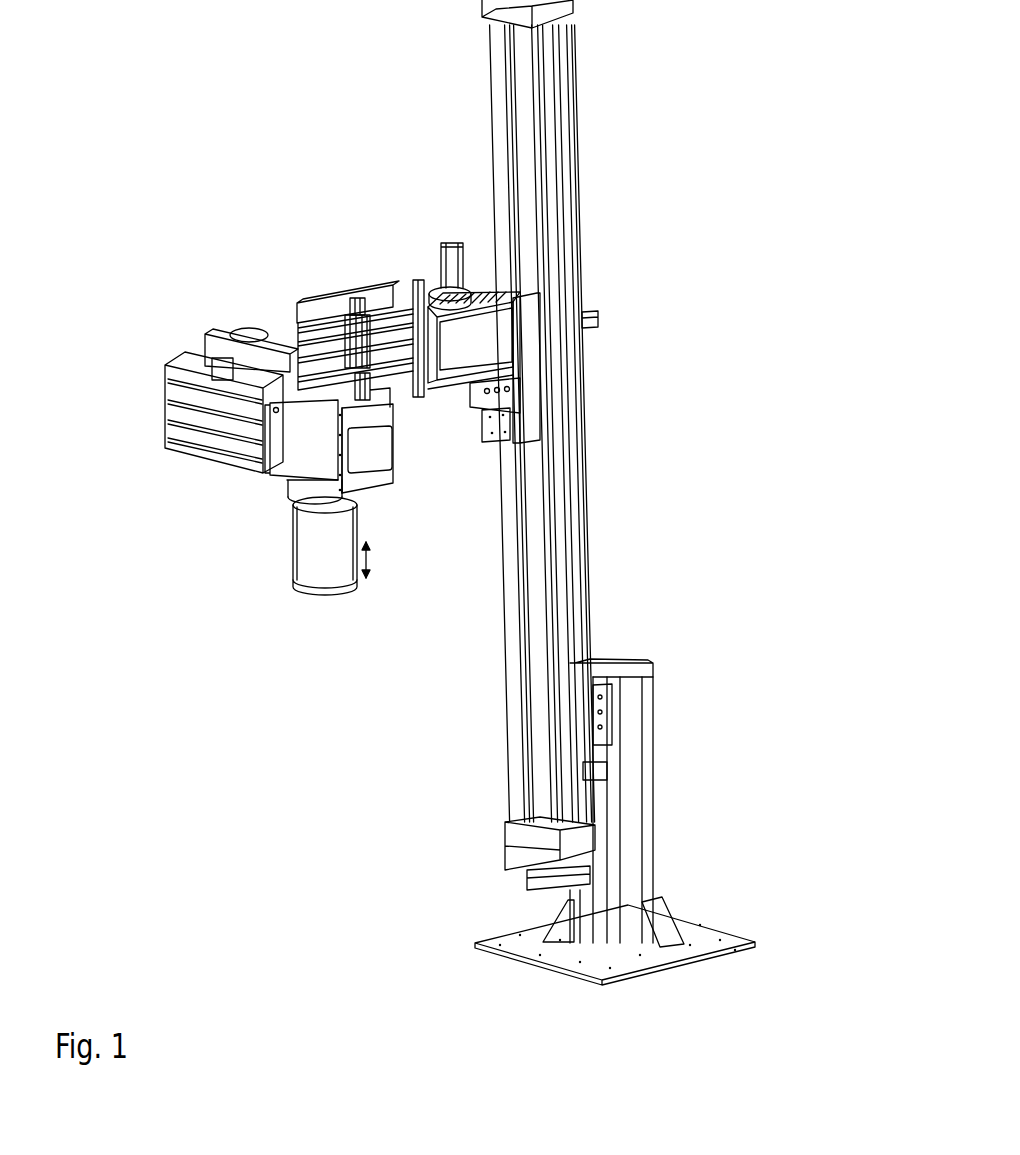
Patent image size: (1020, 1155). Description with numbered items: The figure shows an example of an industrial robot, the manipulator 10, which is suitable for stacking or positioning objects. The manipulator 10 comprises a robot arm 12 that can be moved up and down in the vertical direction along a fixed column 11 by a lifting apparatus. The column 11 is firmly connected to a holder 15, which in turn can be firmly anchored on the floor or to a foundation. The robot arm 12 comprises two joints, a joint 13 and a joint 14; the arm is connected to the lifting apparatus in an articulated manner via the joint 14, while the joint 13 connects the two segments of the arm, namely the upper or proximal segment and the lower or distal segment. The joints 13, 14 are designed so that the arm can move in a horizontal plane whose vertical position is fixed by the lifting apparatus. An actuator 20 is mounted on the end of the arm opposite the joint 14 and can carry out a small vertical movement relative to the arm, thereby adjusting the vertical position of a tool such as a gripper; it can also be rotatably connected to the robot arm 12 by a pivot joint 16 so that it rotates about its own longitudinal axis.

The manipulator 10 is at (683, 220).
The column 11 is at (562, 400).
The robot arm 12 is at (293, 273).
The joint 13 is at (178, 348).
The joint 14 is at (445, 288).
The holder 15 is at (640, 843).
The pivot joint 16 is at (317, 387).
The actuator 20 is at (292, 593).